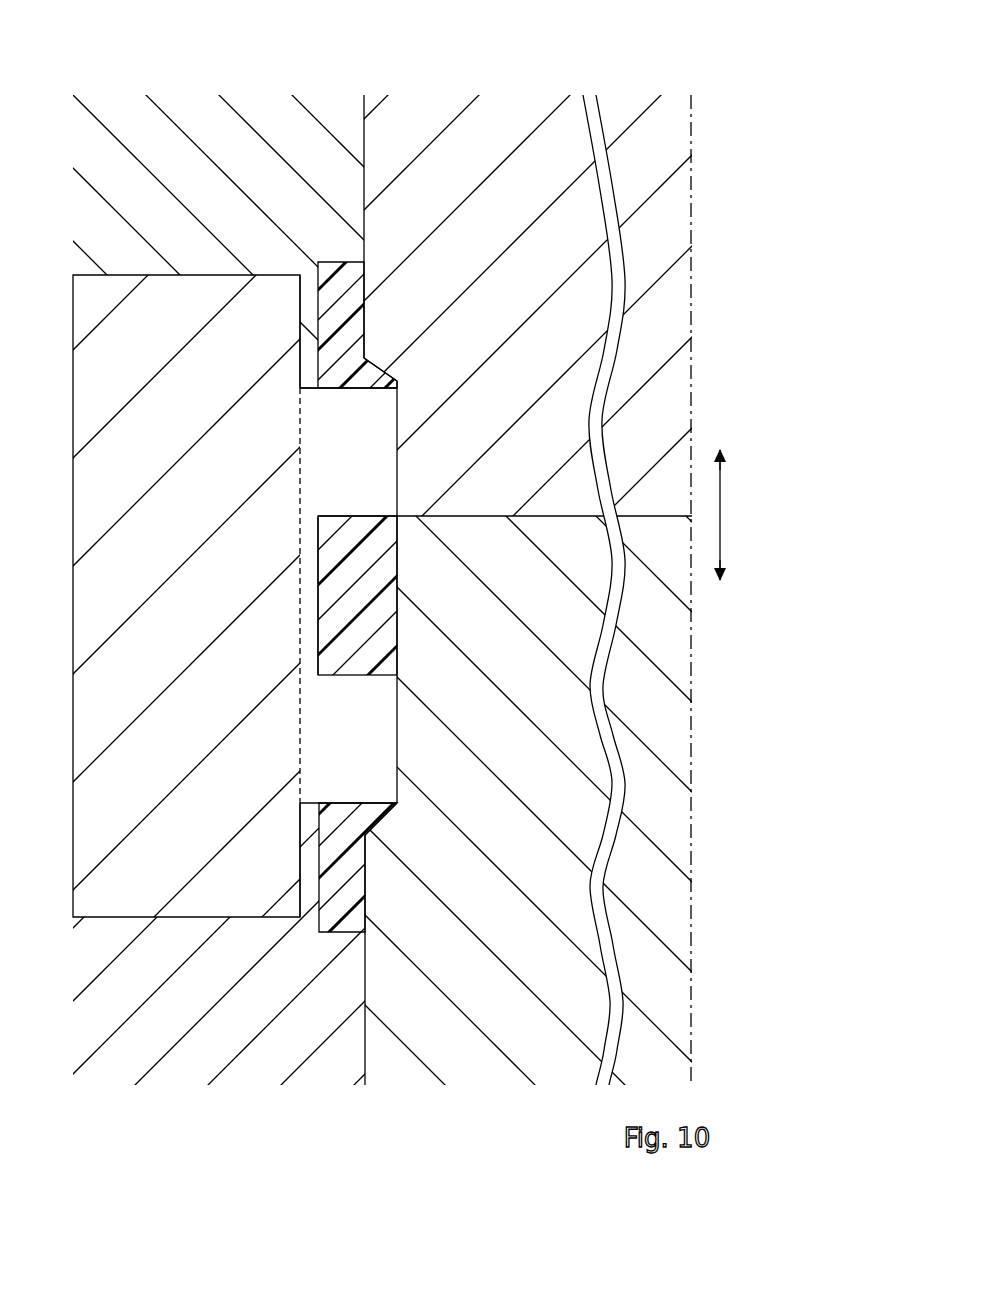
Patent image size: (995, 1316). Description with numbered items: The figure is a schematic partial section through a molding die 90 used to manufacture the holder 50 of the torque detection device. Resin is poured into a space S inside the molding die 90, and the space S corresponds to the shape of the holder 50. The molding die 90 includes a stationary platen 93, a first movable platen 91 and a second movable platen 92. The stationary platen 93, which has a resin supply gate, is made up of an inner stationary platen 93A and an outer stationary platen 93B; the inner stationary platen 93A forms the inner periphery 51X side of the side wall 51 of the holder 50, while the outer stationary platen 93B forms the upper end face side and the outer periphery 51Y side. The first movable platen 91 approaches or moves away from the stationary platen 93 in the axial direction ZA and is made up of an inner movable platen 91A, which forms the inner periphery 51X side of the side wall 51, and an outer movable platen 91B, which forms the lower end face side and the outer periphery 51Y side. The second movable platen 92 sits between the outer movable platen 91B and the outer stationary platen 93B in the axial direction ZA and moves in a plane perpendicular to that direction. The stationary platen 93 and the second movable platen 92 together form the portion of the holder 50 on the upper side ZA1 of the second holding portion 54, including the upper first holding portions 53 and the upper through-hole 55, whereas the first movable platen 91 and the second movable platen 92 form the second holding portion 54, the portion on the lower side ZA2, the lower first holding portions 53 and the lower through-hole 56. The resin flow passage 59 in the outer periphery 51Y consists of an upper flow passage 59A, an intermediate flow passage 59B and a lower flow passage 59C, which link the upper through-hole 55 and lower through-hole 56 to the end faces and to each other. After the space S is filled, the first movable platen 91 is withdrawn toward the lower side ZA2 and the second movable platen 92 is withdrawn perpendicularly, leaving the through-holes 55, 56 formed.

The molding die 90 is at (115, 52).
The stationary platen 93 is at (435, 63).
The inner stationary platen 93A is at (413, 110).
The outer stationary platen 93B is at (328, 110).
The first movable platen 91 is at (293, 1112).
The inner movable platen 91A is at (413, 1063).
The outer movable platen 91B is at (320, 1065).
The second movable platen 92 is at (73, 595).
The holder 50 is at (337, 252).
The side wall 51 is at (300, 635).
The inner periphery 51X is at (366, 307).
The outer periphery 51Y is at (300, 742).
The first holding portion 53 is at (397, 385).
The second holding portion 54 is at (397, 570).
The upper through-hole 55 is at (333, 516).
The lower through-hole 56 is at (333, 803).
The resin flow passage 59 is at (296, 326).
The upper flow passage 59A is at (318, 368).
The intermediate flow passage 59B is at (318, 573).
The lower flow passage 59C is at (319, 862).
The space S is at (346, 596).
The axial direction ZA is at (727, 518).
The upper side ZA1 is at (720, 445).
The lower side ZA2 is at (723, 587).